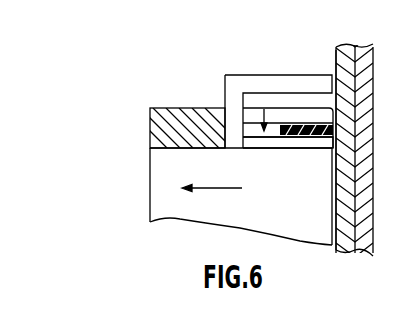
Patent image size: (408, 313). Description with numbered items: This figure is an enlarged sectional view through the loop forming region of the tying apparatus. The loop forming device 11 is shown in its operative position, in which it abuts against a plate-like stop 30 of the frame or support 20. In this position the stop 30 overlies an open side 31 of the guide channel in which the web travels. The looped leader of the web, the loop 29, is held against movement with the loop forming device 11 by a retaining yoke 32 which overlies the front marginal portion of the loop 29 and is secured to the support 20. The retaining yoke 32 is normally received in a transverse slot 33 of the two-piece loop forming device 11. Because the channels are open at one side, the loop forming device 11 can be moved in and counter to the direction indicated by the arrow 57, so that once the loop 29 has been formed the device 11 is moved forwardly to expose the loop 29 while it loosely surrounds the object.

The loop forming device 11 is at (193, 118).
The frame or support 20 is at (364, 57).
The loop 29 is at (303, 138).
The plate-like stop 30 is at (336, 60).
The open side 31 is at (329, 124).
The retaining yoke 32 is at (243, 82).
The transverse slot 33 is at (264, 109).
The arrow 57 is at (210, 190).